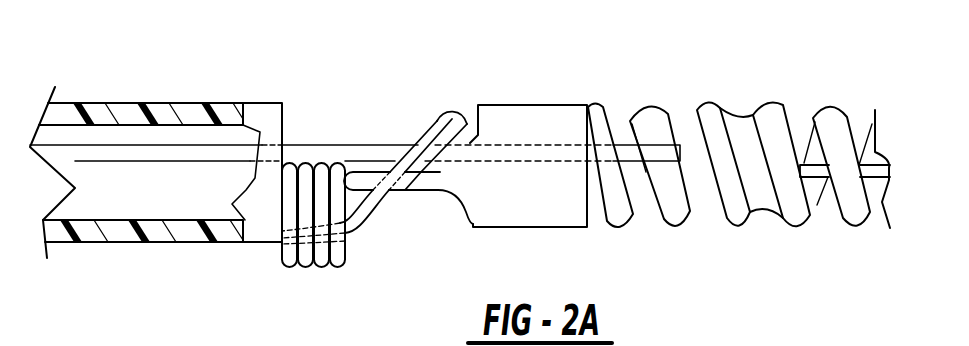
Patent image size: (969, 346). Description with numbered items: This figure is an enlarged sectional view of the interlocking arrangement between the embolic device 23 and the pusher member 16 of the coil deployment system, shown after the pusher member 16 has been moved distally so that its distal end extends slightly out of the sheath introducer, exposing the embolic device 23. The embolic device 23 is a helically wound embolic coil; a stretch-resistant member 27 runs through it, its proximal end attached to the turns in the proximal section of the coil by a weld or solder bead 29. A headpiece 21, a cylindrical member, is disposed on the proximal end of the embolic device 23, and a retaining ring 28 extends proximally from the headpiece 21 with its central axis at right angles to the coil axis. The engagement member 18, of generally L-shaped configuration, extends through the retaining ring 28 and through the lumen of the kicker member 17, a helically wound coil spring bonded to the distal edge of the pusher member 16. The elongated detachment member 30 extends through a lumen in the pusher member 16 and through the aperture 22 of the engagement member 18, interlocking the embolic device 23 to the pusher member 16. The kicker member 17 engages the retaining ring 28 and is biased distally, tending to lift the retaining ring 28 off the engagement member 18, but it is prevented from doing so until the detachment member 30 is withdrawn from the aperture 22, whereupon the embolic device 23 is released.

The pusher member 16 is at (167, 102).
The kicker member 17 is at (303, 257).
The engagement member 18 is at (447, 120).
The headpiece 21 is at (510, 103).
The aperture 22 is at (418, 143).
The embolic device 23 is at (828, 104).
The stretch-resistant member 27 is at (822, 185).
The retaining ring 28 is at (370, 170).
The weld or solder bead 29 is at (741, 105).
The detachment member 30 is at (192, 145).